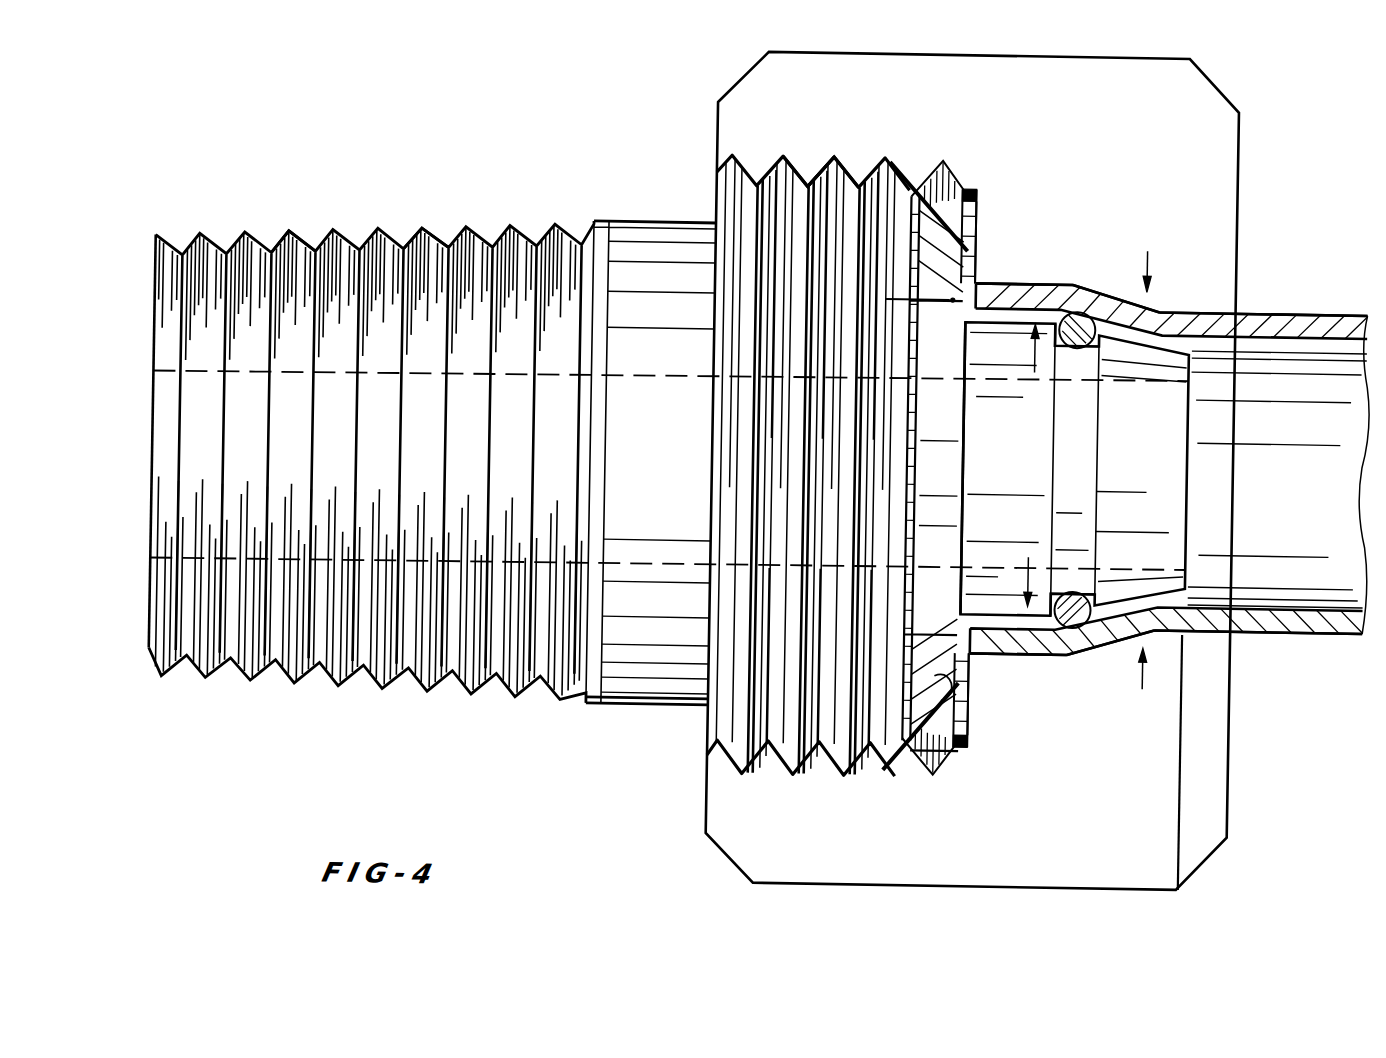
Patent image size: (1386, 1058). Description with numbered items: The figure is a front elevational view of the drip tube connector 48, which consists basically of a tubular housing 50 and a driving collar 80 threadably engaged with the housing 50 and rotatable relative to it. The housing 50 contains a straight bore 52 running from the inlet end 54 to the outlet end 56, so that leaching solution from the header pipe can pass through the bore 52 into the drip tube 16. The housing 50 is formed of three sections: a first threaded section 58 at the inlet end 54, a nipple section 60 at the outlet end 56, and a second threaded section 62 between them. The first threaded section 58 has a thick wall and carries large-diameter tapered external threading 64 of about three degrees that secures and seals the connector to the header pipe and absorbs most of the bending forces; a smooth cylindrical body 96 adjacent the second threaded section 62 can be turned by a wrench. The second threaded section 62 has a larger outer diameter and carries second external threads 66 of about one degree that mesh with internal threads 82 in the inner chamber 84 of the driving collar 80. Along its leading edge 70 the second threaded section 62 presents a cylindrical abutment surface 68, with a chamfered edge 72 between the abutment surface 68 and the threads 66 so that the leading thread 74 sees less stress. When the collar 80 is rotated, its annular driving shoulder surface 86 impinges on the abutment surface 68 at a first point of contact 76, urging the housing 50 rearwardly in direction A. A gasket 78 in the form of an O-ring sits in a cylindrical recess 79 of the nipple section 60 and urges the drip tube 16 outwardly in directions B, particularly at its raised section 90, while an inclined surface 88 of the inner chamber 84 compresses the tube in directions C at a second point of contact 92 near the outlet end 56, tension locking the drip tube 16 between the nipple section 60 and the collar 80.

The drip tube 16 is at (1303, 297).
The drip tube connector 48 is at (374, 170).
The tubular housing 50 is at (651, 200).
The straight bore 52 is at (393, 404).
The inlet end 54 is at (150, 473).
The outlet end 56 is at (1190, 455).
The first threaded section 58 is at (301, 231).
The nipple section 60 is at (1118, 441).
The second threaded section 62 is at (849, 411).
The external threading 64 is at (431, 226).
The second external threads 66 is at (840, 161).
The cylindrical abutment surface 68 is at (890, 155).
The leading edge 70 is at (965, 444).
The chamfered edge 72 is at (951, 189).
The leading thread 74 is at (905, 742).
The first point of contact 76 is at (970, 644).
The gasket 78 is at (1033, 620).
The cylindrical recess 79 is at (1071, 632).
The driving collar 80 is at (752, 872).
The internal threads 82 is at (825, 171).
The inner chamber 84 is at (1027, 278).
The annular driving shoulder surface 86 is at (981, 216).
The inclined surface 88 is at (1163, 298).
The raised section 90 is at (1077, 287).
The second point of contact 92 is at (1133, 636).
The smooth cylindrical body 96 is at (664, 704).